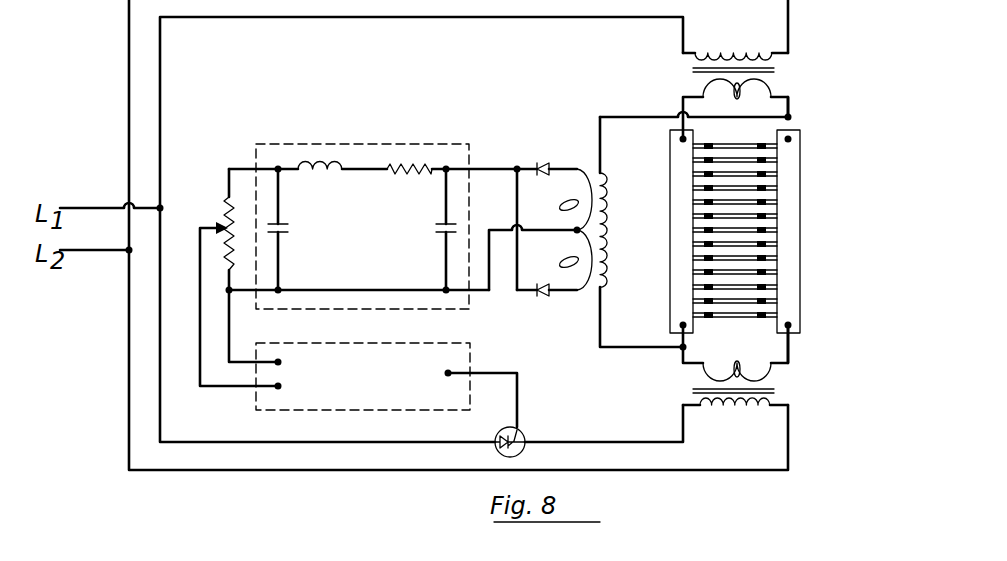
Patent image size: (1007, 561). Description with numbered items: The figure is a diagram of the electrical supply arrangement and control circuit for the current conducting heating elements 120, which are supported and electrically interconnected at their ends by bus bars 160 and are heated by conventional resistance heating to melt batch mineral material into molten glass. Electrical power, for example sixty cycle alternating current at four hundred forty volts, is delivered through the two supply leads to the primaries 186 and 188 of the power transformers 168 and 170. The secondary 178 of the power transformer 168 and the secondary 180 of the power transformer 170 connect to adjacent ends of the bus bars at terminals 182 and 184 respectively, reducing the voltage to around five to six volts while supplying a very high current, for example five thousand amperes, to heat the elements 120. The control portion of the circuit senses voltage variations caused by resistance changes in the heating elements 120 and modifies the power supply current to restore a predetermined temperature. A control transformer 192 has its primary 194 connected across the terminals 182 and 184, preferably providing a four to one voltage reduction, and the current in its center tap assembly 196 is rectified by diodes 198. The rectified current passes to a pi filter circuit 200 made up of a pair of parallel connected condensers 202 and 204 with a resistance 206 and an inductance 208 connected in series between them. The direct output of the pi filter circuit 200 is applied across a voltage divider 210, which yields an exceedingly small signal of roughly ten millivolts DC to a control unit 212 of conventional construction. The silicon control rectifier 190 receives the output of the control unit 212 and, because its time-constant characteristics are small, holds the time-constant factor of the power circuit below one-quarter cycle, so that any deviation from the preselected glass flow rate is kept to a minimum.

The heating elements 120 is at (745, 258).
The bus bars 160 is at (743, 231).
The power transformer 168 is at (686, 66).
The power transformer 170 is at (790, 387).
The secondary 178 is at (704, 87).
The secondary 180 is at (706, 368).
The terminal 182 is at (678, 138).
The terminal 184 is at (680, 322).
The primary 186 is at (752, 27).
The primary 188 is at (736, 410).
The silicon control rectifier 190 is at (520, 435).
The control transformer 192 is at (586, 158).
The primary 194 is at (594, 184).
The center tap assembly 196 is at (581, 172).
The diodes 198 is at (540, 165).
The pi filter circuit 200 is at (372, 202).
The condenser 202 is at (437, 228).
The condenser 204 is at (287, 229).
The resistance 206 is at (413, 165).
The inductance 208 is at (333, 126).
The voltage divider 210 is at (225, 209).
The control unit 212 is at (480, 342).